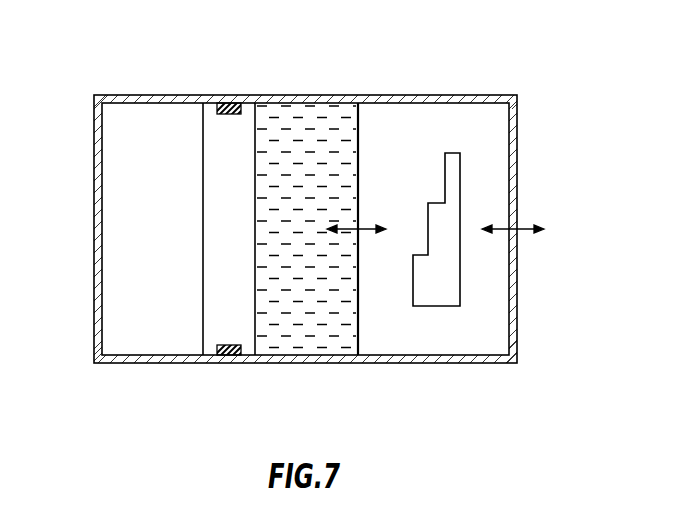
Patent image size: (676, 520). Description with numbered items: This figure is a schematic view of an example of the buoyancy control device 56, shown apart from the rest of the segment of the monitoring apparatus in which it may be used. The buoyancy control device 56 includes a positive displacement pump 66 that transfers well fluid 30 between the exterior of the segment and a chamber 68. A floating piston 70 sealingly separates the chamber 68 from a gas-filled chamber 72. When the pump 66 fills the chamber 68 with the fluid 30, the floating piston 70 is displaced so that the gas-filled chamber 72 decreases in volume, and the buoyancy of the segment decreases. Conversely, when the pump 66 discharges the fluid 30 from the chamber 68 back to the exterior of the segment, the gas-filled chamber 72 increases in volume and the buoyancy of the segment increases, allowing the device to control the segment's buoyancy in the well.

The buoyancy control device 56 is at (571, 58).
The positive displacement pump 66 is at (423, 365).
The chamber 68 is at (288, 103).
The floating piston 70 is at (201, 332).
The gas-filled chamber 72 is at (100, 240).
The well fluid 30 is at (283, 335).